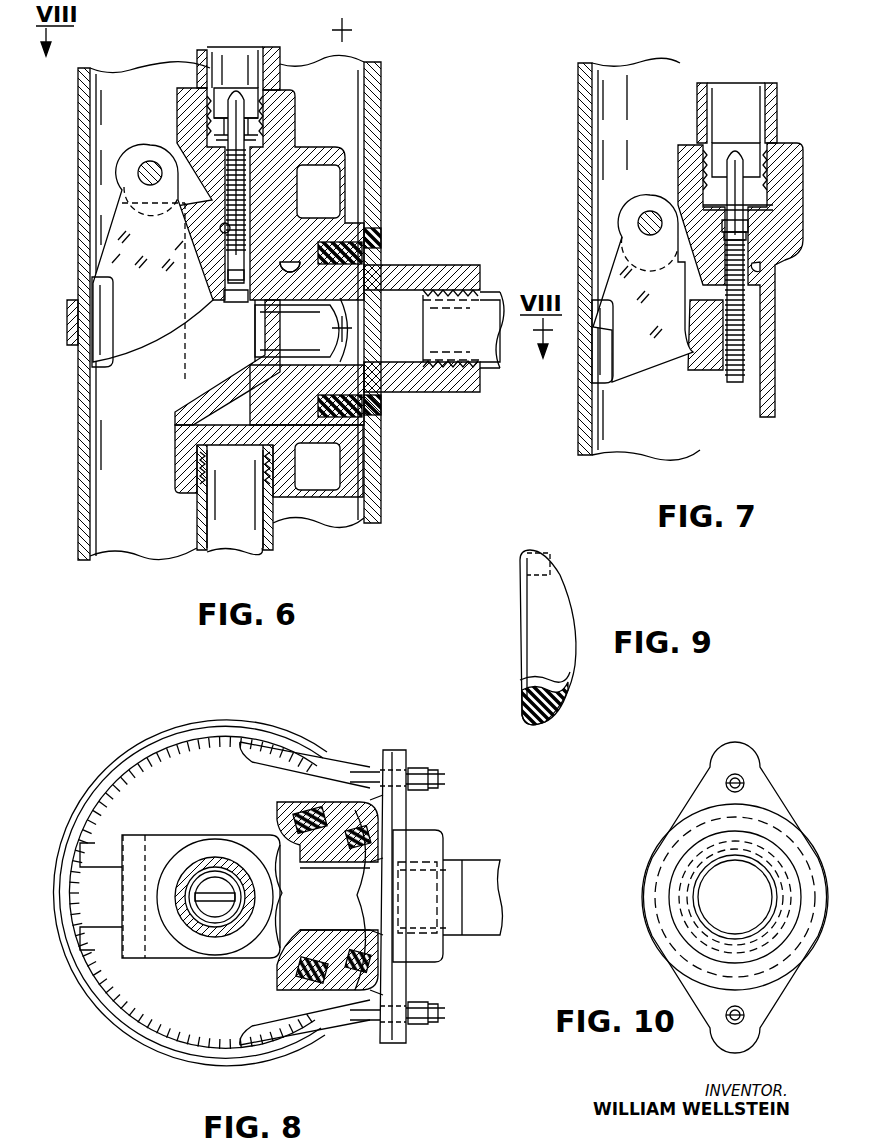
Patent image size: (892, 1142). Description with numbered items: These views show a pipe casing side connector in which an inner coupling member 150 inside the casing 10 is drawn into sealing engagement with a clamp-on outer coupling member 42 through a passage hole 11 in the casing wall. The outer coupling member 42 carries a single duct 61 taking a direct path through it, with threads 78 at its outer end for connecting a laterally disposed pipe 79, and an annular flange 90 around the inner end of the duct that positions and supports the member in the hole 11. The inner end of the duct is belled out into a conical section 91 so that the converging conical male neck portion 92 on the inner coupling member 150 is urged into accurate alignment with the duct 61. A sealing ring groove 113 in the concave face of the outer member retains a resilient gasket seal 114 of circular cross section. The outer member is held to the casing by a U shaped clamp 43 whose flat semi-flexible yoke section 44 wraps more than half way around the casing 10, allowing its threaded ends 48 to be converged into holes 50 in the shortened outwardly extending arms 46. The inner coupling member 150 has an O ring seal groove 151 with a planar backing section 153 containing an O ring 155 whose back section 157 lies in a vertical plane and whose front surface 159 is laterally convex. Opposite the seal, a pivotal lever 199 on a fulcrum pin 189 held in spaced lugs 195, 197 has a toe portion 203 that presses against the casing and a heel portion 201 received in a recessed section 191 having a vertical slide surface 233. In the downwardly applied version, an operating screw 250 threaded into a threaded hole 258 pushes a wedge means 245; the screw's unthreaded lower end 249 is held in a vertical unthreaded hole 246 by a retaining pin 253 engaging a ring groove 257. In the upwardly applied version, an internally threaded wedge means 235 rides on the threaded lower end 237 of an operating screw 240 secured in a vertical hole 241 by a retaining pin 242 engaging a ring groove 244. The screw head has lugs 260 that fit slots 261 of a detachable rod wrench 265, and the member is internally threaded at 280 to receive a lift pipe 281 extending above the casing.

In FIG. 6, the casing 10 is at (82, 147).
In FIG. 7, the casing 10 is at (585, 97).
In FIG. 8, the casing 10 is at (103, 1005).
In FIG. 6, the passage hole 11 is at (383, 410).
In FIG. 8, the passage hole 11 is at (318, 862).
In FIG. 6, the clamp-on outer coupling member 42 is at (485, 389).
In FIG. 10, the clamp-on outer coupling member 42 is at (795, 992).
In FIG. 8, the clamp-on outer coupling member 42 is at (440, 830).
In FIG. 8, the U shaped clamp 43 is at (320, 750).
In FIG. 6, the yoke section 44 is at (67, 325).
In FIG. 8, the yoke section 44 is at (158, 742).
In FIG. 10, the outwardly extending arms 46 is at (750, 768).
In FIG. 8, the outwardly extending arms 46 is at (396, 755).
In FIG. 8, the threaded ends 48 is at (428, 772).
In FIG. 10, the holes 50 is at (730, 777).
In FIG. 8, the holes 50 is at (370, 765).
In FIG. 6, the duct 61 is at (407, 332).
In FIG. 10, the duct 61 is at (745, 886).
In FIG. 8, the duct 61 is at (398, 892).
In FIG. 6, the threads 78 is at (462, 345).
In FIG. 10, the threads 78 is at (763, 923).
In FIG. 8, the threads 78 is at (440, 862).
In FIG. 6, the pipe 79 is at (483, 362).
In FIG. 8, the pipe 79 is at (455, 875).
In FIG. 6, the flange 90 is at (373, 377).
In FIG. 10, the flange 90 is at (800, 838).
In FIG. 8, the flange 90 is at (352, 930).
In FIG. 6, the conical section 91 is at (412, 292).
In FIG. 8, the conical section 91 is at (398, 921).
In FIG. 6, the conical male neck portion 92 is at (377, 297).
In FIG. 8, the conical male neck portion 92 is at (350, 862).
In FIG. 6, the sealing ring groove 113 is at (405, 262).
In FIG. 10, the sealing ring groove 113 is at (672, 833).
In FIG. 8, the sealing ring groove 113 is at (378, 968).
In FIG. 6, the resilient gasket seal 114 is at (395, 398).
In FIG. 8, the resilient gasket seal 114 is at (378, 825).
In FIG. 6, the inner coupling member 150 is at (168, 465).
In FIG. 7, the inner coupling member 150 is at (802, 143).
In FIG. 8, the inner coupling member 150 is at (168, 963).
In FIG. 6, the O ring seal groove 151 is at (325, 430).
In FIG. 8, the O ring seal groove 151 is at (300, 803).
In FIG. 6, the planar backing section 153 is at (316, 408).
In FIG. 8, the planar backing section 153 is at (300, 970).
In FIG. 6, the O ring 155 is at (382, 230).
In FIG. 9, the O ring 155 is at (550, 702).
In FIG. 8, the O ring 155 is at (318, 988).
In FIG. 9, the back section 157 is at (520, 602).
In FIG. 9, the laterally convex front surface 159 is at (570, 592).
In FIG. 6, the fulcrum pin 189 is at (150, 163).
In FIG. 7, the fulcrum pin 189 is at (648, 213).
In FIG. 6, the recessed section 191 is at (198, 378).
In FIG. 7, the recessed section 191 is at (700, 280).
In FIG. 6, the lug 195 is at (177, 147).
In FIG. 7, the lug 195 is at (675, 193).
In FIG. 8, the lug 195 is at (158, 840).
In FIG. 8, the lug 197 is at (150, 952).
In FIG. 6, the pivotal lever 199 is at (110, 209).
In FIG. 7, the pivotal lever 199 is at (645, 380).
In FIG. 6, the heel portion 201 is at (208, 305).
In FIG. 7, the heel portion 201 is at (695, 350).
In FIG. 6, the toe portion 203 is at (103, 366).
In FIG. 7, the toe portion 203 is at (603, 382).
In FIG. 6, the vertical slide surface 233 is at (268, 352).
In FIG. 7, the vertical slide surface 233 is at (770, 393).
In FIG. 7, the internally threaded wedge means 235 is at (702, 375).
In FIG. 7, the threaded lower end 237 is at (738, 382).
In FIG. 7, the operating screw 240 is at (717, 298).
In FIG. 7, the vertical hole 241 is at (750, 230).
In FIG. 7, the retaining pin 242 is at (750, 238).
In FIG. 7, the ring groove 244 is at (750, 221).
In FIG. 6, the wedge means 245 is at (217, 322).
In FIG. 6, the vertical unthreaded hole 246 is at (224, 232).
In FIG. 6, the unthreaded lower end 249 is at (240, 302).
In FIG. 6, the operating screw 250 is at (222, 215).
In FIG. 8, the operating screw 250 is at (213, 922).
In FIG. 6, the retaining pin 253 is at (280, 290).
In FIG. 6, the ring groove 257 is at (232, 278).
In FIG. 6, the threaded hole 258 is at (242, 190).
In FIG. 6, the lugs 260 is at (263, 88).
In FIG. 7, the lugs 260 is at (758, 135).
In FIG. 8, the lugs 260 is at (195, 897).
In FIG. 6, the slots 261 is at (260, 126).
In FIG. 6, the rod wrench 265 is at (260, 40).
In FIG. 6, the internal threads 280 is at (277, 103).
In FIG. 7, the internal threads 280 is at (707, 183).
In FIG. 8, the internal threads 280 is at (205, 868).
In FIG. 6, the lift pipe 281 is at (278, 50).
In FIG. 7, the lift pipe 281 is at (777, 93).
In FIG. 8, the lift pipe 281 is at (230, 868).